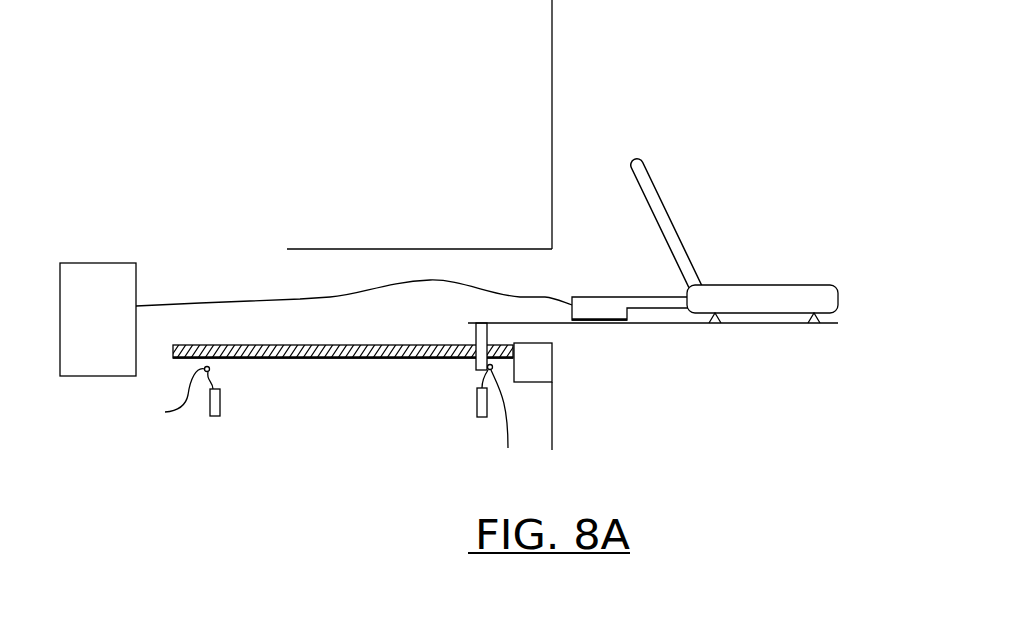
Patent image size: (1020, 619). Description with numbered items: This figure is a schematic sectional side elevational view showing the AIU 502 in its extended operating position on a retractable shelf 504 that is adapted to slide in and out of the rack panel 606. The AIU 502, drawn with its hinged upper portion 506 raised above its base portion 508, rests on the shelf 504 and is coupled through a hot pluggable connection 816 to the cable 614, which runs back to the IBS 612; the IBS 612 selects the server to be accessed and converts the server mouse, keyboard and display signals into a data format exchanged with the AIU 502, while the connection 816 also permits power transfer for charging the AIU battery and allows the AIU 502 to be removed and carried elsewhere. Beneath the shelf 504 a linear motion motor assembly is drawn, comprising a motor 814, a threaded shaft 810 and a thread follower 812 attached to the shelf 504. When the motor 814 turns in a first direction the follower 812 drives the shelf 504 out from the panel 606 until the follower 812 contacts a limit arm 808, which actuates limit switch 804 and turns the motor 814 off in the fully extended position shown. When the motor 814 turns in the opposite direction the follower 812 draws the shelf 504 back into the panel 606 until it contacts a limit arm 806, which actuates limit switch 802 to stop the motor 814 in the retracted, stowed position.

The AIU 502 is at (847, 307).
The retractable shelf 504 is at (762, 323).
The seat back 506 is at (655, 175).
The seat cushion 508 is at (780, 286).
The rack panel 606 is at (552, 30).
The IBS 612 is at (77, 262).
The cable 614 is at (323, 297).
The limit switch 802 is at (208, 417).
The limit switch 804 is at (473, 400).
The limit arm 806 is at (158, 398).
The limit arm 808 is at (509, 425).
The threaded shaft 810 is at (385, 358).
The thread follower 812 is at (475, 333).
The motor 814 is at (538, 360).
The hot pluggable connection 816 is at (598, 307).